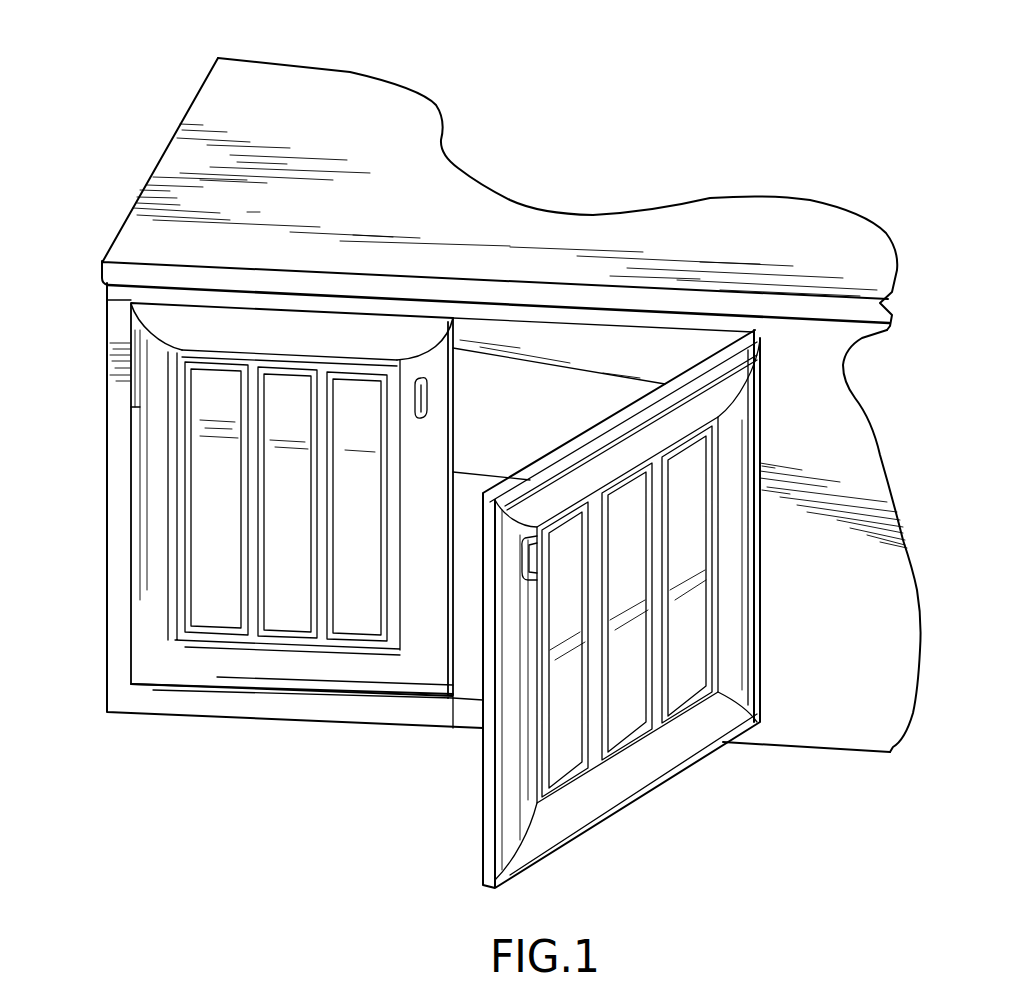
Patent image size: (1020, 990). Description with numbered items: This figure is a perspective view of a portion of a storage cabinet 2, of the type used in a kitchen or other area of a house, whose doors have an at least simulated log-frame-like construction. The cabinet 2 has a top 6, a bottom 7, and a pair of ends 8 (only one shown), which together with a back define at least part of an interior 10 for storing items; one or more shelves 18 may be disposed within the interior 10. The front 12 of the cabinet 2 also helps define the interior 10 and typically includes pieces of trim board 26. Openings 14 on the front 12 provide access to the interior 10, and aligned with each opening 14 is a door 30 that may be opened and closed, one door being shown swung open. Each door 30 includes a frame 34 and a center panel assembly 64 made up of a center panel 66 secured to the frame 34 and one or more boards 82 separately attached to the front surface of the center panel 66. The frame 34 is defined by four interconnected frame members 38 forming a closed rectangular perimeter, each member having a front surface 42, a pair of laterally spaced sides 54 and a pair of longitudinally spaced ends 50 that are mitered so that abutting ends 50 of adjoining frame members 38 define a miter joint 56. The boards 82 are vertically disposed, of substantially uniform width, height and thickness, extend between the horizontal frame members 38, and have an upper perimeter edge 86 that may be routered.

The storage cabinet 2 is at (701, 148).
The top 6 is at (217, 93).
The bottom 7 is at (466, 700).
The ends 8 is at (107, 525).
The interior 10 is at (684, 348).
The front 12 is at (850, 713).
The openings 14 is at (537, 337).
The shelves 18 is at (491, 423).
The trim board 26 is at (117, 300).
The door 30 is at (130, 640).
The frame 34 is at (190, 693).
The frame members 38 is at (172, 317).
The front surface 42 is at (320, 330).
The ends 50 is at (153, 340).
The sides 54 is at (133, 407).
The miter joint 56 is at (427, 347).
The center panel assembly 64 is at (685, 667).
The center panel 66 is at (713, 418).
The boards 82 is at (204, 491).
The upper perimeter edge 86 is at (557, 525).